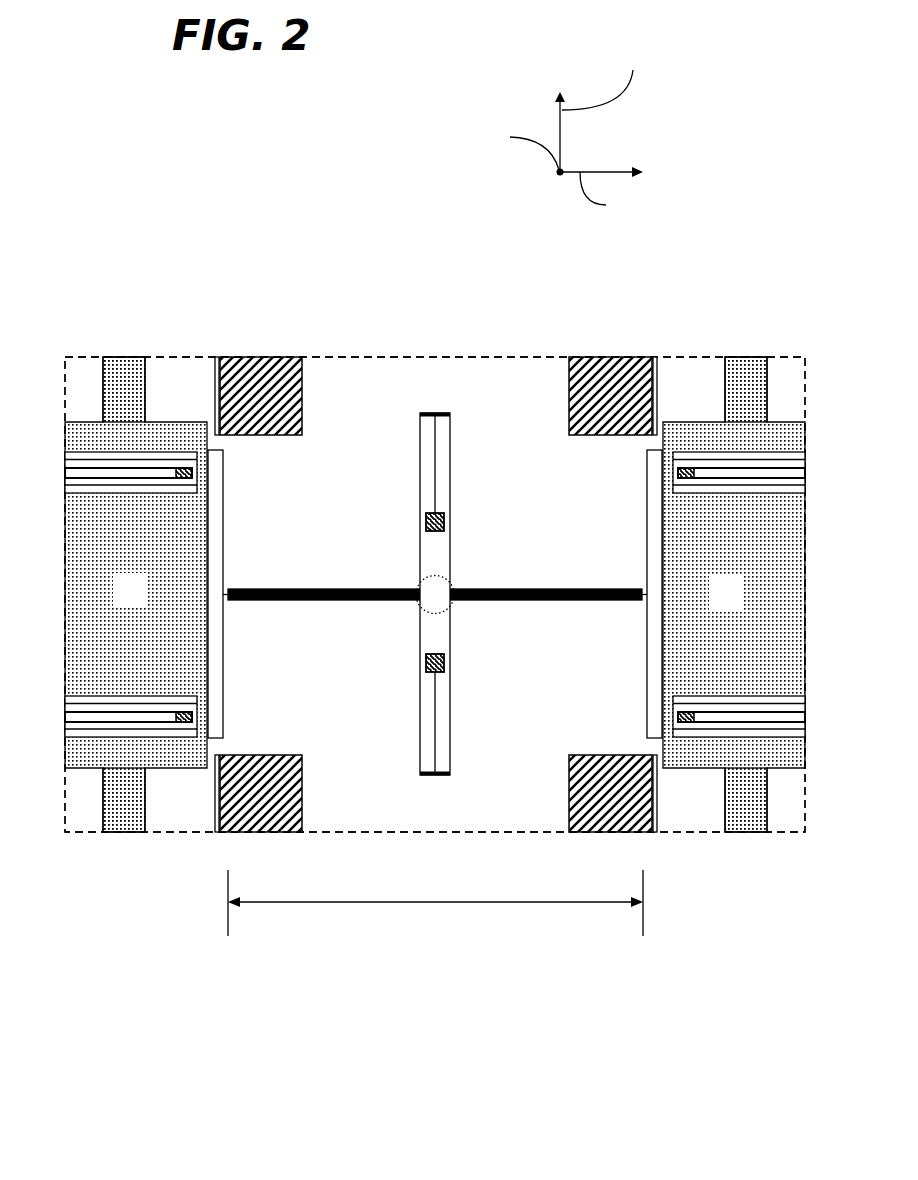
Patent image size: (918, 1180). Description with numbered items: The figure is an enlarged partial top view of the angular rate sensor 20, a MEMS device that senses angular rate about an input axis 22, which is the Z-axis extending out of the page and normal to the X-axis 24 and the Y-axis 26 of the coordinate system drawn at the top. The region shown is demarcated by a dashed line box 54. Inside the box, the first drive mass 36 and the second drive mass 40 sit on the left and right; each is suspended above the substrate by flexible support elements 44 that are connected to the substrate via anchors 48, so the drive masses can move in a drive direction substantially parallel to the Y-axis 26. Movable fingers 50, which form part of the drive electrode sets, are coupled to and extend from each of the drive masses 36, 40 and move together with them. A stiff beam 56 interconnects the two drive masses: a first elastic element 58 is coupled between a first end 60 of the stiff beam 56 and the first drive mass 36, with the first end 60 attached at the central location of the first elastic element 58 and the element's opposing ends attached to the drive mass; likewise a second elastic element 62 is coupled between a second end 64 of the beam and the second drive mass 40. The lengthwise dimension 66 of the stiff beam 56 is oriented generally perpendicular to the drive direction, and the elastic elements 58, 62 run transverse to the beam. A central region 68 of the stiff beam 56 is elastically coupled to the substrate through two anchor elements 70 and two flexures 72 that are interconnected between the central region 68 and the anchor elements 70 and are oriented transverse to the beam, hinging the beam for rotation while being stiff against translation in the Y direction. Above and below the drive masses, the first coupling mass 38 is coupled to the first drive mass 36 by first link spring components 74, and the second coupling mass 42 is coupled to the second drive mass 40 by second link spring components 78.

The angular rate sensor 20 is at (484, 1035).
The input axis 22 is at (560, 174).
The X-axis 24 is at (603, 172).
The Y-axis 26 is at (560, 110).
The first drive mass 36 is at (142, 600).
The first coupling mass 38 is at (302, 366).
The second drive mass 40 is at (739, 601).
The second coupling mass 42 is at (569, 366).
The flexible support elements 44 is at (135, 468).
The anchors 48 is at (176, 470).
The movable fingers 50 is at (103, 372).
The dashed line box 54 is at (405, 345).
The stiff beam 56 is at (368, 589).
The first elastic element 58 is at (223, 473).
The first end 60 is at (229, 601).
The second elastic element 62 is at (647, 473).
The second end 64 is at (641, 601).
The lengthwise dimension 66 is at (303, 903).
The central region 68 is at (453, 603).
The anchor element 70 is at (444, 519).
The flexure 72 is at (450, 423).
The first link spring components 74 is at (215, 372).
The second link spring components 78 is at (657, 372).